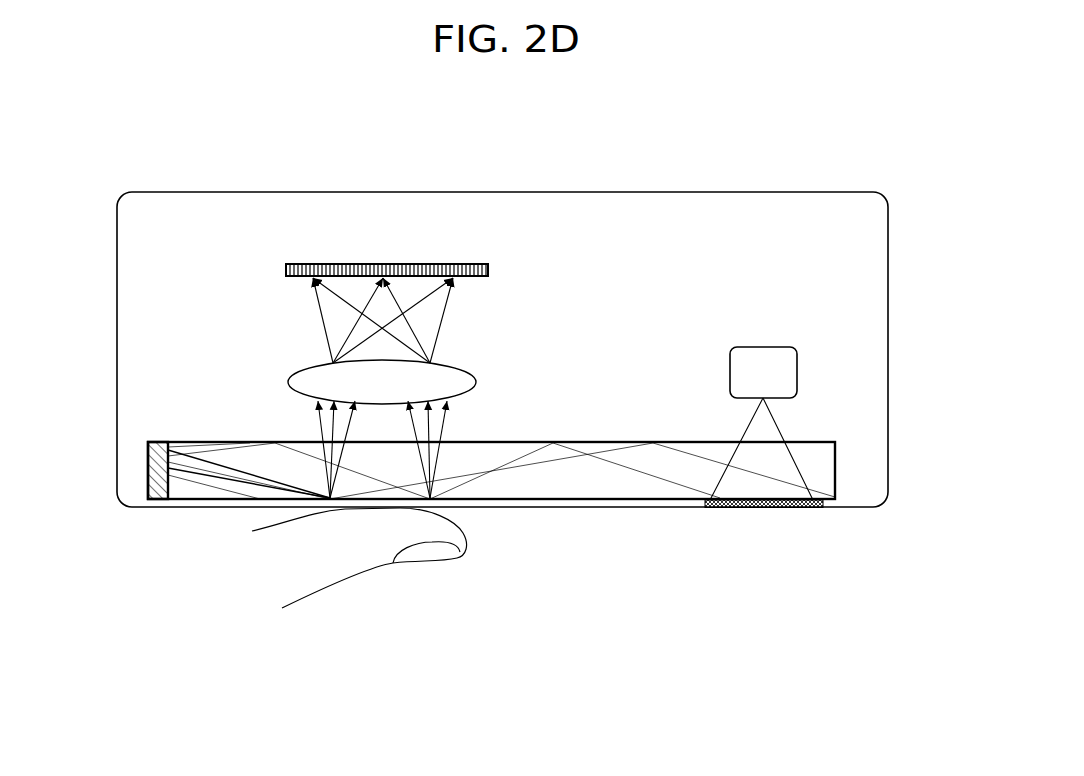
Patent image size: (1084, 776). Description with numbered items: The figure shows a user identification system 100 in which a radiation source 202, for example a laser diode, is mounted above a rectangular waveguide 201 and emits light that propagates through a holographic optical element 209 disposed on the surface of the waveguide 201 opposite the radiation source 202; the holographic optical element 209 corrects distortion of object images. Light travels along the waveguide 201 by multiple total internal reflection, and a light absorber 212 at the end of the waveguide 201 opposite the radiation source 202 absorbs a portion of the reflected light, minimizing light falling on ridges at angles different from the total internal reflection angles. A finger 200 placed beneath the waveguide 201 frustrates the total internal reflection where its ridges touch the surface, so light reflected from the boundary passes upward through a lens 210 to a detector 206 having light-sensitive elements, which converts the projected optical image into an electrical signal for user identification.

The user identification system 100 is at (703, 192).
The finger 200 is at (367, 565).
The waveguide 201 is at (230, 441).
The radiation source 202 is at (763, 346).
The detector 206 is at (488, 269).
The holographic optical element 209 is at (705, 503).
The lens 210 is at (476, 382).
The light absorber 212 is at (159, 441).